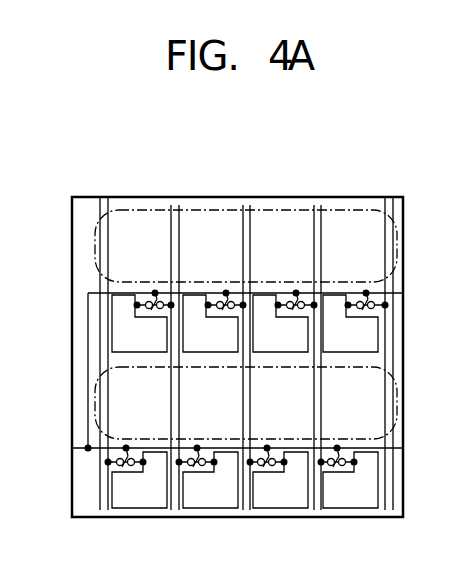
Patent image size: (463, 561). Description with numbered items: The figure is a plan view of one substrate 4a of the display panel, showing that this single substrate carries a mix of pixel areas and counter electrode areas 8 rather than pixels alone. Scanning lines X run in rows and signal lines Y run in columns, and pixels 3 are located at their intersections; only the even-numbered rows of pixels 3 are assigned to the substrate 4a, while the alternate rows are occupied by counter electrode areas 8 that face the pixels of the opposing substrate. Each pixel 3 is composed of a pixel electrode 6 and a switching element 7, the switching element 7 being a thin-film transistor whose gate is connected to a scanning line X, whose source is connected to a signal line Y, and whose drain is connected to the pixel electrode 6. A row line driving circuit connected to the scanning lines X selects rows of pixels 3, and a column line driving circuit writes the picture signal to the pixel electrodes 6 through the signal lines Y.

The pixel 3 is at (117, 357).
The substrate 4a is at (356, 197).
The pixel electrode 6 is at (118, 318).
The switching element 7 is at (153, 293).
The counter electrode area 8 is at (213, 210).
The scanning line X is at (403, 300).
The signal line Y is at (106, 160).